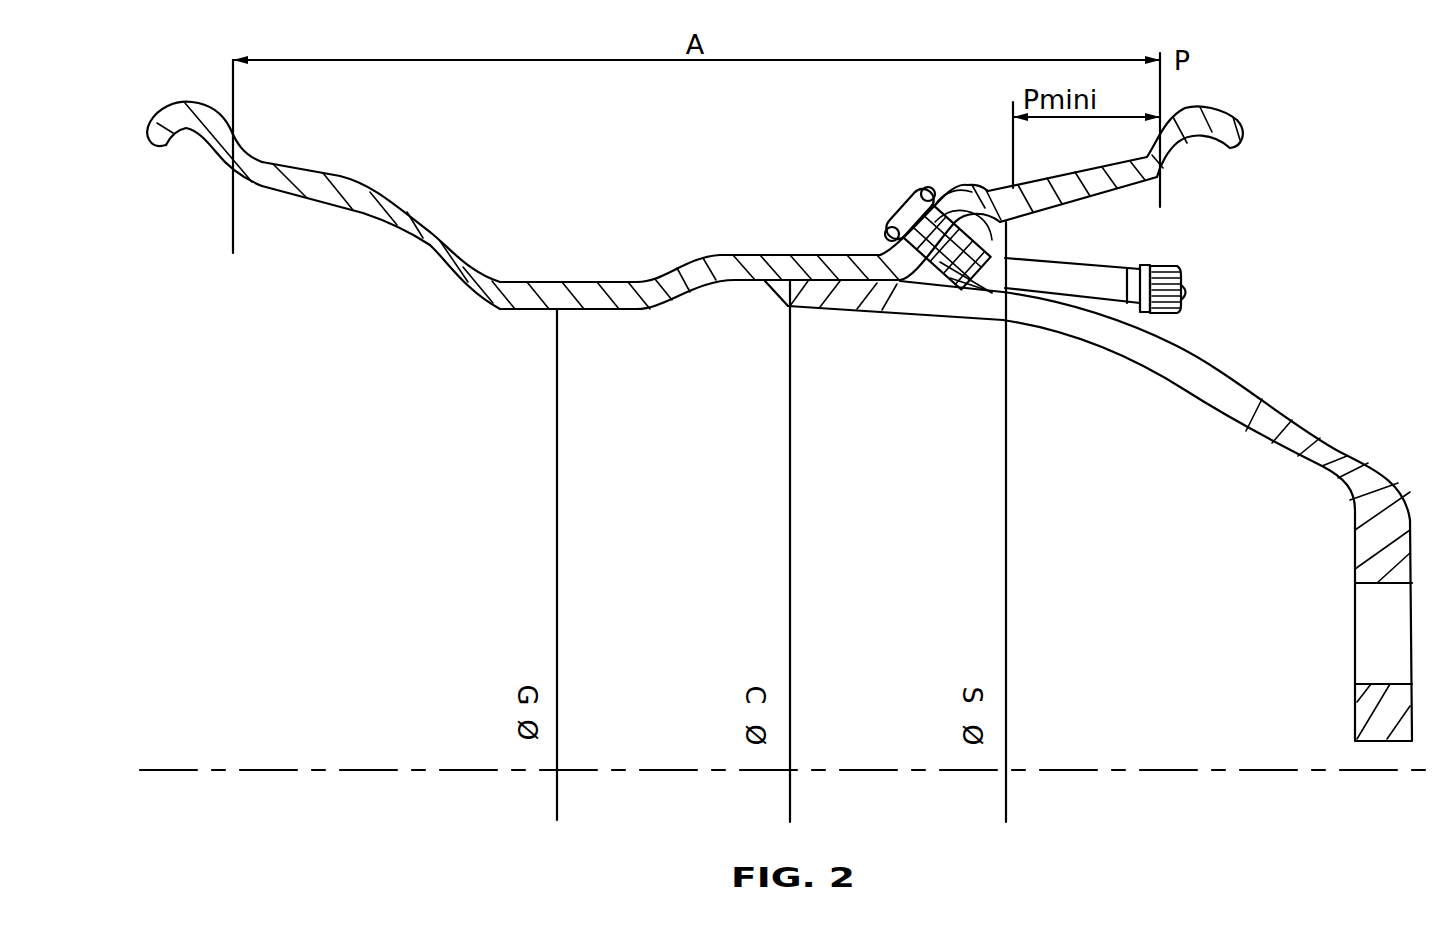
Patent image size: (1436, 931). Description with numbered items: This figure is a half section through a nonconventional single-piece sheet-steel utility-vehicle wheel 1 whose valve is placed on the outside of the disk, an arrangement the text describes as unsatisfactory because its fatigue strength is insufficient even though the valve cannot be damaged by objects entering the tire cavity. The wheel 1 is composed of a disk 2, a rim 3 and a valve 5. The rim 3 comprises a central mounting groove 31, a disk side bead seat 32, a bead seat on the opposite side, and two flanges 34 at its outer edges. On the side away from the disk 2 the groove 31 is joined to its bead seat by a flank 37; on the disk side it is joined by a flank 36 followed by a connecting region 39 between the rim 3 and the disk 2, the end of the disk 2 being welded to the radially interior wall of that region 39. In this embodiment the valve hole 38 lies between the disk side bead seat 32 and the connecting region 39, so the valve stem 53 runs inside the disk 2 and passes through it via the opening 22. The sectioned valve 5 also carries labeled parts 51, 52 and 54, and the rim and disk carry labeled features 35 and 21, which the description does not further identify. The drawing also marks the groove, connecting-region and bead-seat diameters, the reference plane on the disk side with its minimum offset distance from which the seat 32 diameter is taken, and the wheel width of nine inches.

The wheel 1 is at (400, 600).
The disk 2 is at (1312, 508).
The rim 3 is at (555, 192).
The valve 5 is at (1203, 248).
The disc rim-attachment portion 21 is at (805, 283).
The opening 22 is at (1225, 405).
The central mounting groove 31 is at (303, 173).
The disk side bead seat 32 is at (1053, 184).
The flange 34 is at (193, 127).
The hump 35 is at (972, 180).
The flank 36 is at (675, 275).
The flank 37 is at (423, 256).
The valve hole 38 is at (940, 190).
The connecting region 39 is at (808, 263).
The valve body 51 is at (937, 283).
The valve nut 52 is at (903, 213).
The valve stem 53 is at (1078, 265).
The valve cap 54 is at (1186, 276).